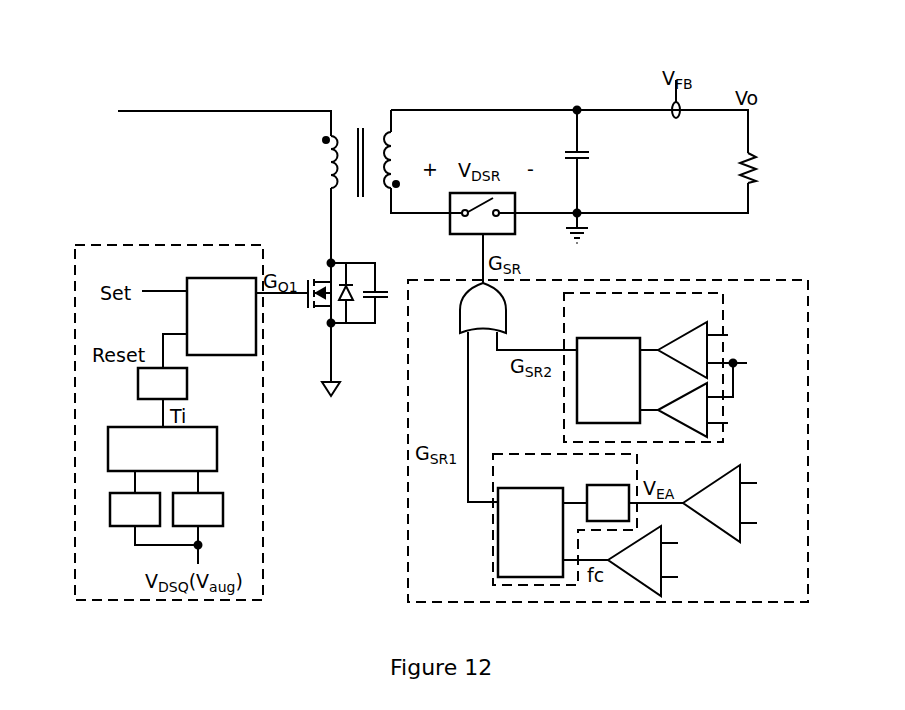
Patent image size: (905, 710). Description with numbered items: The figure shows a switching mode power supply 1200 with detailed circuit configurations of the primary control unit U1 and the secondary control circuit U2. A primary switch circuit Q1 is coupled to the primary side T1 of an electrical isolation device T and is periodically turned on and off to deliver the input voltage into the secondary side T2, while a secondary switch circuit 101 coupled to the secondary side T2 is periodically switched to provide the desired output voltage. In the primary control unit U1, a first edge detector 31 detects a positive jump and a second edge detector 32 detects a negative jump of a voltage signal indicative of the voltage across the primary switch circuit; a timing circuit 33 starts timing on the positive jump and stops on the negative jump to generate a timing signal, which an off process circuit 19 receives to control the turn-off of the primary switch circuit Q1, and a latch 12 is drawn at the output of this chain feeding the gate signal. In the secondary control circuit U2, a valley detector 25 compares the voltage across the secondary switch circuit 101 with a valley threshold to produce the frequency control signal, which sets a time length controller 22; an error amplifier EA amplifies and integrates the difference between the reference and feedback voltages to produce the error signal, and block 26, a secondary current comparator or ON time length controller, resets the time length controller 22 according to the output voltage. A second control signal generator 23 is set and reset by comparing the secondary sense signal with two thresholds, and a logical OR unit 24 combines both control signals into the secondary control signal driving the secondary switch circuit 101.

The switching mode power supply 1200 is at (157, 94).
The SR flip-flop (primary side) 12 is at (221, 316).
The off process circuit 19 is at (162, 383).
The timing circuit 33 is at (162, 449).
The first edge detector 31 is at (135, 509).
The second edge detector 32 is at (198, 509).
The secondary switch circuit 101 is at (461, 216).
The logical OR unit 24 is at (483, 308).
The second control signal generator 23 is at (600, 322).
The time length controller 22 is at (525, 481).
The secondary current comparator or ON time length controller 26 is at (608, 503).
The valley detector 25 is at (665, 561).
The primary switch circuit Q1 is at (322, 292).
The primary side T1 is at (313, 162).
The secondary side T2 is at (404, 158).
The electrical isolation device T is at (360, 148).
The primary control unit U1 is at (115, 592).
The secondary control circuit U2 is at (458, 582).
The error amplifier EA is at (740, 503).